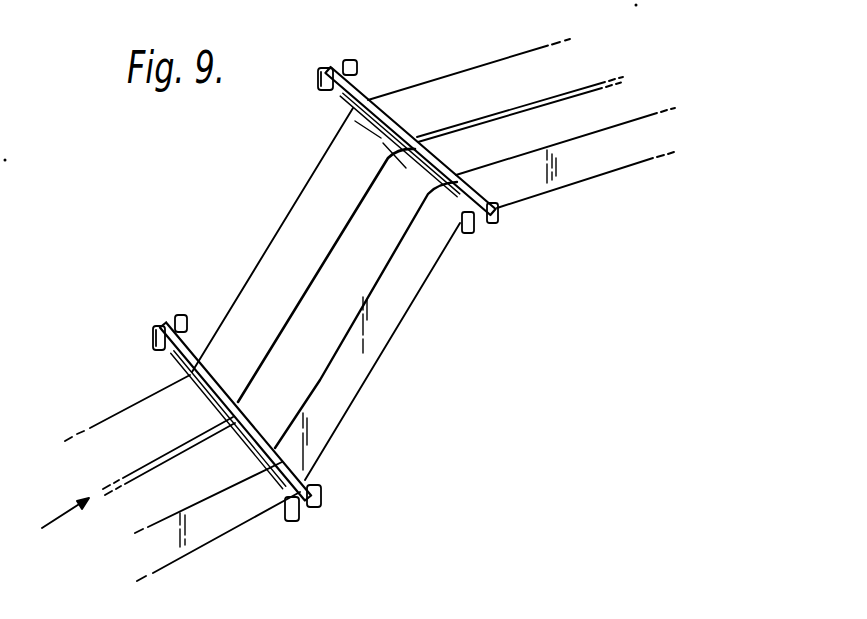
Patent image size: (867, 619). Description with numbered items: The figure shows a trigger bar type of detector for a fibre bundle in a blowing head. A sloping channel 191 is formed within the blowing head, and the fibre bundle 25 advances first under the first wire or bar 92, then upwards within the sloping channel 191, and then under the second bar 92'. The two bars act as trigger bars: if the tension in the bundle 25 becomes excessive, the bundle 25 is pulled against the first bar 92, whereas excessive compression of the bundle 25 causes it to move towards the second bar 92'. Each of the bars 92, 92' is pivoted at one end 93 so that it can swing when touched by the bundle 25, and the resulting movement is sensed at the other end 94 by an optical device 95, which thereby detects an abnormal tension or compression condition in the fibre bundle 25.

The fibre bundle 25 is at (542, 96).
The sloping channel 191 is at (355, 372).
The first wire or bar 92 is at (235, 381).
The second bar 92' is at (410, 122).
The pivoted end 93 is at (343, 61).
The sensed end 94 is at (484, 214).
The optical device 95 is at (467, 233).